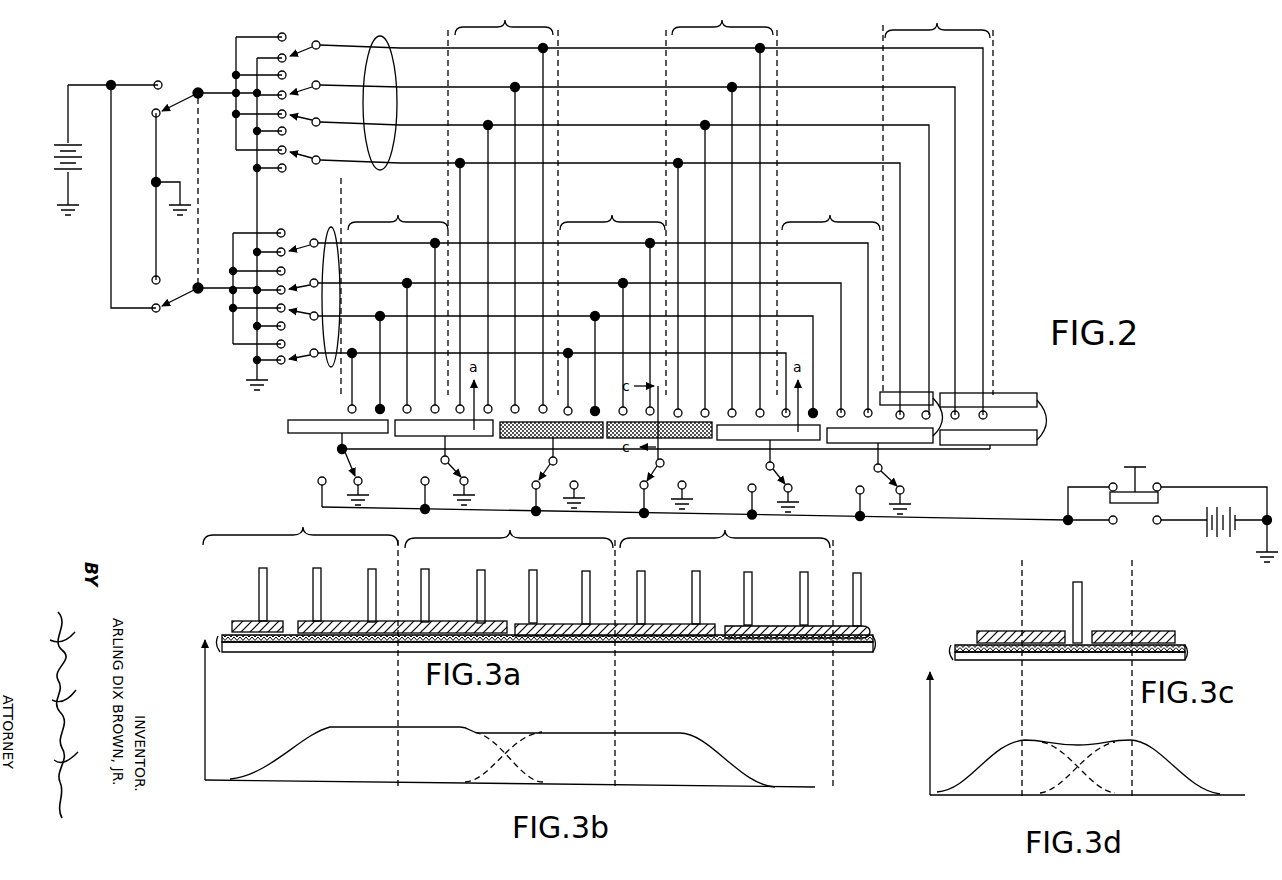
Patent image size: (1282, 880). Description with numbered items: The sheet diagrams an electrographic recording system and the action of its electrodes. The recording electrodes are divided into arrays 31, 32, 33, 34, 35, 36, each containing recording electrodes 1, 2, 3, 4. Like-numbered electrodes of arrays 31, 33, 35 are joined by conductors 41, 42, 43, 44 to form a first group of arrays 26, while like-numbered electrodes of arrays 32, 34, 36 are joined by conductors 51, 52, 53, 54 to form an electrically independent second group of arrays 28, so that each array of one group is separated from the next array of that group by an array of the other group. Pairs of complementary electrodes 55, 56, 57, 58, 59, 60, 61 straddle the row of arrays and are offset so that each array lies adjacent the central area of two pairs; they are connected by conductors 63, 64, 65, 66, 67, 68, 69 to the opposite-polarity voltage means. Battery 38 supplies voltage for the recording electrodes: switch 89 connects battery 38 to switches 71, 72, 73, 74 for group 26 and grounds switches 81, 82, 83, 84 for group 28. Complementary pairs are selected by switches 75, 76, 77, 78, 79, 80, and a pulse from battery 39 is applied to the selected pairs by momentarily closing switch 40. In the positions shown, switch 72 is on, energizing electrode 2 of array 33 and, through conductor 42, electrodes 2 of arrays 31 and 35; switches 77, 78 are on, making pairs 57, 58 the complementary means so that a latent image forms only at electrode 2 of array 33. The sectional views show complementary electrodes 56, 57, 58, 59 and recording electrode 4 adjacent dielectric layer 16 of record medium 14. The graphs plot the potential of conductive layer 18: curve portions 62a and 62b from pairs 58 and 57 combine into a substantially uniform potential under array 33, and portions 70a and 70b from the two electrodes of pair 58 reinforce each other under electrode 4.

In FIG. 2, the recording electrode 1 is at (513, 393).
In FIG. 3A, the recording electrode 1 is at (427, 570).
In FIG. 2, the recording electrode 2 is at (541, 394).
In FIG. 3A, the recording electrode 2 is at (267, 569).
In FIG. 2, the recording electrode 3 is at (568, 400).
In FIG. 3A, the recording electrode 3 is at (320, 569).
In FIG. 2, the recording electrode 4 is at (586, 397).
In FIG. 3A, the recording electrode 4 is at (374, 570).
In FIG. 3C, the recording electrode 4 is at (1082, 626).
In FIG. 3A, the record medium 14 is at (876, 648).
In FIG. 3C, the record medium 14 is at (1188, 650).
In FIG. 3A, the dielectric layer 16 is at (820, 646).
In FIG. 3C, the dielectric layer 16 is at (1180, 648).
In FIG. 3A, the conductive layer 18 is at (868, 652).
In FIG. 3C, the conductive layer 18 is at (1112, 655).
In FIG. 2, the first group of arrays 26 is at (328, 232).
In FIG. 2, the second group of arrays 28 is at (388, 40).
In FIG. 2, the array of recording electrodes 31 is at (398, 305).
In FIG. 2, the array of recording electrodes 32 is at (504, 216).
In FIG. 3A, the array of recording electrodes 32 is at (300, 523).
In FIG. 2, the array of recording electrodes 33 is at (612, 306).
In FIG. 3A, the array of recording electrodes 33 is at (509, 543).
In FIG. 2, the array of recording electrodes 34 is at (722, 218).
In FIG. 3A, the array of recording electrodes 34 is at (725, 543).
In FIG. 2, the array of recording electrodes 35 is at (831, 307).
In FIG. 2, the array of recording electrodes 36 is at (937, 221).
In FIG. 2, the battery 38 is at (56, 161).
In FIG. 2, the battery 39 is at (1222, 535).
In FIG. 2, the pulse switch 40 is at (1143, 488).
In FIG. 2, the conductor 41 is at (534, 358).
In FIG. 2, the conductor 42 is at (534, 322).
In FIG. 2, the conductor 43 is at (534, 288).
In FIG. 2, the conductor 44 is at (534, 250).
In FIG. 2, the conductor 51 is at (477, 163).
In FIG. 2, the conductor 52 is at (504, 125).
In FIG. 2, the conductor 53 is at (532, 87).
In FIG. 2, the conductor 54 is at (573, 48).
In FIG. 2, the complementary electrode pair 55 is at (337, 424).
In FIG. 2, the complementary electrode pair 56 is at (426, 430).
In FIG. 3A, the complementary electrode pair 56 is at (256, 621).
In FIG. 2, the complementary electrode pair 57 is at (537, 433).
In FIG. 3A, the complementary electrode pair 57 is at (352, 613).
In FIG. 2, the complementary electrode pair 58 is at (632, 440).
In FIG. 3A, the complementary electrode pair 58 is at (570, 615).
In FIG. 3C, the complementary electrode pair 58 is at (1005, 631).
In FIG. 2, the complementary electrode pair 59 is at (748, 442).
In FIG. 3A, the complementary electrode pair 59 is at (868, 628).
In FIG. 2, the complementary electrode pair 60 is at (856, 445).
In FIG. 2, the complementary electrode pair 61 is at (996, 396).
In FIG. 3B, the potential curve portion 62a is at (700, 745).
In FIG. 3B, the potential curve portion 62b is at (292, 755).
In FIG. 2, the conductor 63 is at (340, 449).
In FIG. 2, the conductor 64 is at (450, 449).
In FIG. 2, the conductor 65 is at (548, 449).
In FIG. 2, the conductor 66 is at (658, 450).
In FIG. 2, the conductor 67 is at (768, 450).
In FIG. 2, the conductor 68 is at (890, 452).
In FIG. 2, the conductor 69 is at (990, 449).
In FIG. 3D, the potential curve portion 70a is at (976, 760).
In FIG. 3D, the potential curve portion 70b is at (1180, 762).
In FIG. 2, the switch 71 is at (303, 360).
In FIG. 2, the switch 72 is at (303, 320).
In FIG. 2, the switch 73 is at (303, 288).
In FIG. 2, the switch 74 is at (303, 256).
In FIG. 2, the switch 75 is at (336, 476).
In FIG. 2, the switch 76 is at (413, 490).
In FIG. 2, the switch 77 is at (584, 491).
In FIG. 2, the switch 78 is at (692, 492).
In FIG. 2, the switch 79 is at (762, 499).
In FIG. 2, the switch 80 is at (872, 501).
In FIG. 2, the switch 81 is at (308, 156).
In FIG. 2, the switch 82 is at (309, 118).
In FIG. 2, the switch 83 is at (303, 83).
In FIG. 2, the switch 84 is at (303, 42).
In FIG. 2, the switch 89 is at (199, 165).